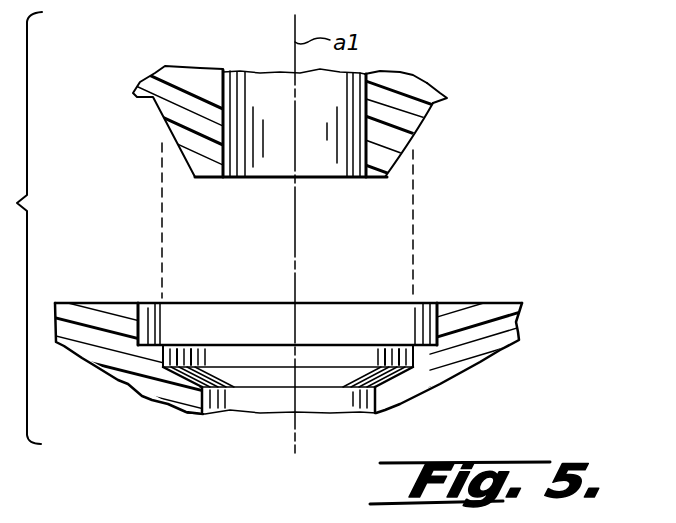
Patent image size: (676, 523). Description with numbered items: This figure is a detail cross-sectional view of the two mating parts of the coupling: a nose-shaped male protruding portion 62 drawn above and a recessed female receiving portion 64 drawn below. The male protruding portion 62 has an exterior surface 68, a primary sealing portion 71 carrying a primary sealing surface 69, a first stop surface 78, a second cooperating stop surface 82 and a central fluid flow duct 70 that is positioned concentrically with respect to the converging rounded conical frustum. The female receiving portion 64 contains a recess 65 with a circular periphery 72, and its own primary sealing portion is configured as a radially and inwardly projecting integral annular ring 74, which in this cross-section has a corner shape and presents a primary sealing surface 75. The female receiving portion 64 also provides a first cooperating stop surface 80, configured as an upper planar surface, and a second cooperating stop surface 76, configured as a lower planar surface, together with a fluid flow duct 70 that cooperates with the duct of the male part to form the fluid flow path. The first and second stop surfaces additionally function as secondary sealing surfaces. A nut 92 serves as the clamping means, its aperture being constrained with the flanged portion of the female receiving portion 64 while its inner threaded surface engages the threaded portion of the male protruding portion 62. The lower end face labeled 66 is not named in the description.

The male protruding portion 62 is at (440, 132).
The recessed female receiving portion 64 is at (165, 421).
The recess 65 is at (350, 320).
The lower end face of ferrule 66 is at (205, 168).
The exterior surface 68 is at (167, 147).
The primary sealing surface 69 is at (418, 141).
The fluid flow duct 70 is at (277, 163).
The primary sealing portion 71 is at (405, 132).
The circular periphery 72 is at (173, 303).
The integral annular ring 74 is at (165, 345).
The primary sealing surface 75 is at (233, 372).
The second cooperating stop surface 76 is at (383, 393).
The first stop surface 78 is at (378, 178).
The first cooperating stop surface 80 is at (452, 302).
The second cooperating stop surface 82 is at (447, 99).
The nut 92 is at (296, 420).